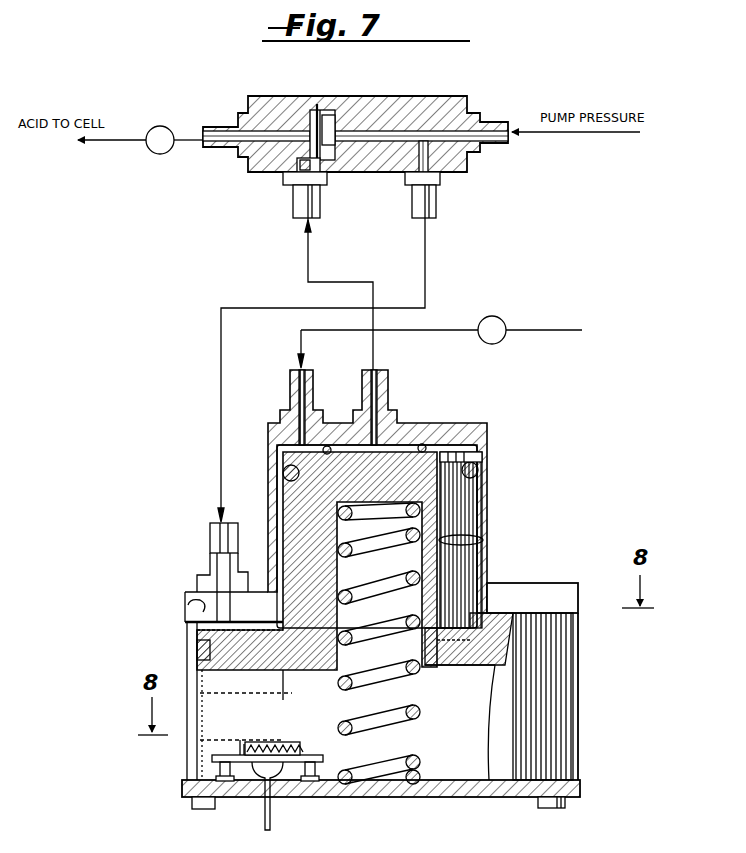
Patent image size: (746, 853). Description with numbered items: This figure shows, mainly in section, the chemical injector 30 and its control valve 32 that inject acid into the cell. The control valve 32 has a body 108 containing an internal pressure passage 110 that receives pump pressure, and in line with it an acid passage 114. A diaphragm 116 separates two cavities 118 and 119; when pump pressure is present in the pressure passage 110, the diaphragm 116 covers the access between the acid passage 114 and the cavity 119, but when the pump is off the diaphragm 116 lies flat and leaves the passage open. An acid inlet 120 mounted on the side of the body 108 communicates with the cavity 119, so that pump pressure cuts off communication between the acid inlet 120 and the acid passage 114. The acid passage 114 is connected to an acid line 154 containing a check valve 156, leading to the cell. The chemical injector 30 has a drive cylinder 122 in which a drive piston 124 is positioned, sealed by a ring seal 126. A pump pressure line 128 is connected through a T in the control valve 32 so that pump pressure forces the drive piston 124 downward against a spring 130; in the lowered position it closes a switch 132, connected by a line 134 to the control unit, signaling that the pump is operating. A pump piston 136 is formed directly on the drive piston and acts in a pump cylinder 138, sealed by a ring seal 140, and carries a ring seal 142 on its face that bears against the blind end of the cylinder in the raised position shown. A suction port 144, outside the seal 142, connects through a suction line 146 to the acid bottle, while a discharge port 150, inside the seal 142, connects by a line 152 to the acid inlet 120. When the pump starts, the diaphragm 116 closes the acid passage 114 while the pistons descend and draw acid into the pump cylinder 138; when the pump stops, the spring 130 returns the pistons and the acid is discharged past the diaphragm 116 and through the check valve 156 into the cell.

The chemical injector 30 is at (353, 606).
The control valve 32 is at (349, 162).
The body 108 is at (408, 107).
The internal passage 110 is at (468, 118).
The acid passage 114 is at (270, 130).
The diaphragm 116 is at (328, 112).
The cavity 118 is at (340, 122).
The cavity 119 is at (312, 178).
The acid inlet 120 is at (298, 205).
The drive cylinder 122 is at (190, 602).
The drive piston 124 is at (208, 640).
The ring seal 126 is at (478, 642).
The pump pressure line 128 is at (430, 252).
The spring 130 is at (380, 778).
The switch 132 is at (297, 762).
The line 134 is at (265, 830).
The pump piston 136 is at (452, 565).
The pump cylinder 138 is at (462, 542).
The ring seal 140 is at (480, 468).
The ring seal 142 is at (440, 443).
The suction port 144 is at (285, 410).
The suction line 146 is at (460, 333).
The discharge port 150 is at (394, 410).
The line 152 is at (308, 261).
The acid line 154 is at (193, 142).
The check valve 156 is at (160, 155).